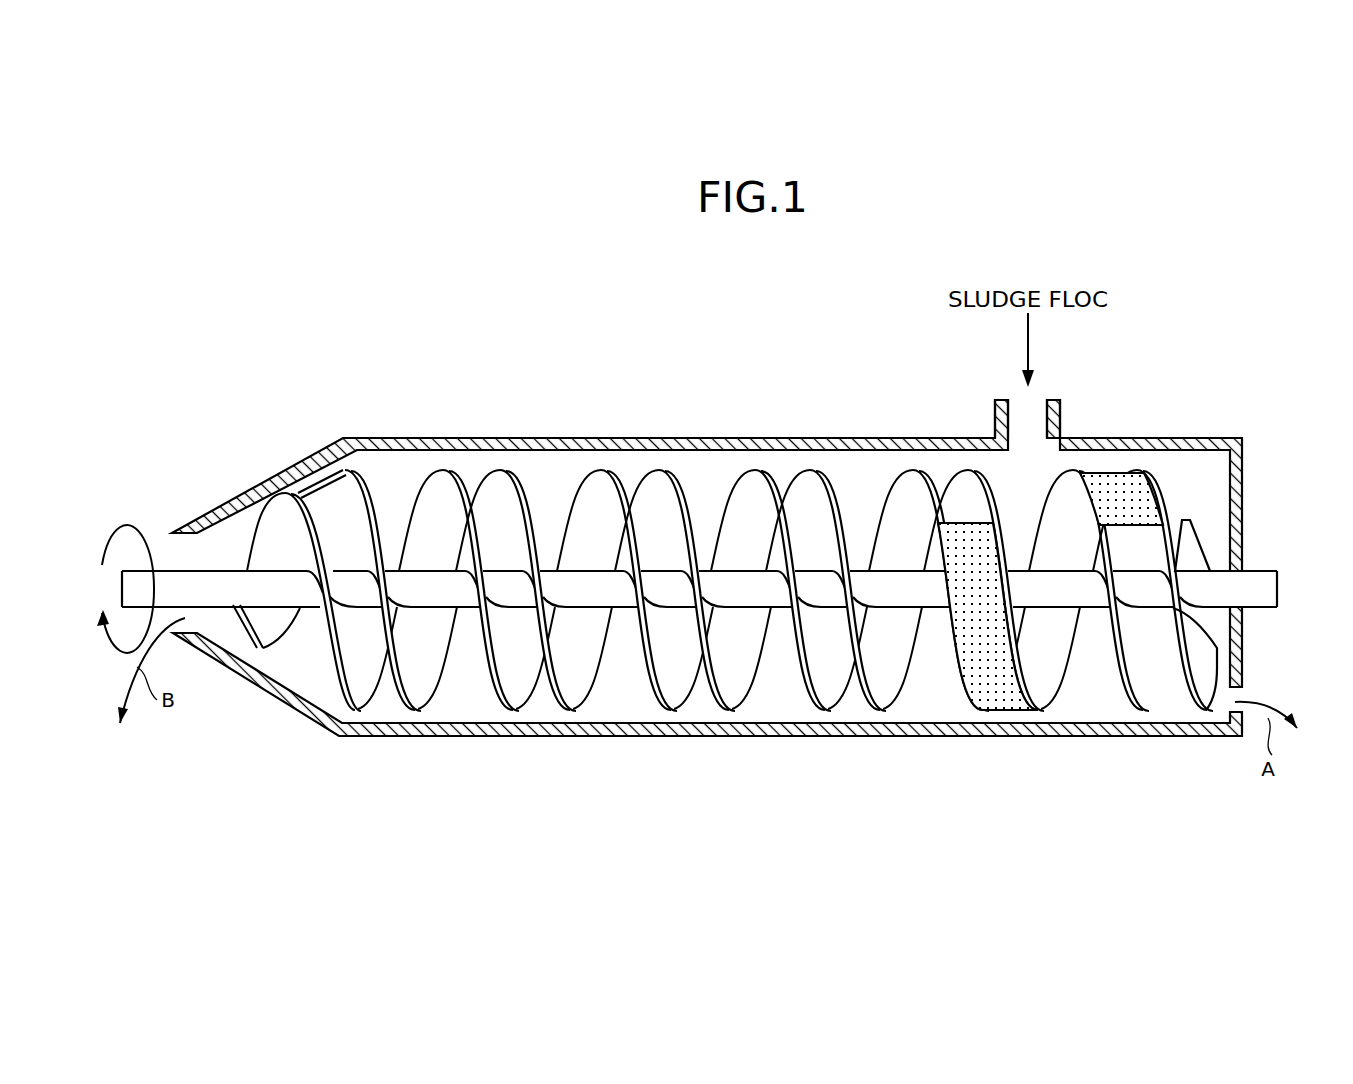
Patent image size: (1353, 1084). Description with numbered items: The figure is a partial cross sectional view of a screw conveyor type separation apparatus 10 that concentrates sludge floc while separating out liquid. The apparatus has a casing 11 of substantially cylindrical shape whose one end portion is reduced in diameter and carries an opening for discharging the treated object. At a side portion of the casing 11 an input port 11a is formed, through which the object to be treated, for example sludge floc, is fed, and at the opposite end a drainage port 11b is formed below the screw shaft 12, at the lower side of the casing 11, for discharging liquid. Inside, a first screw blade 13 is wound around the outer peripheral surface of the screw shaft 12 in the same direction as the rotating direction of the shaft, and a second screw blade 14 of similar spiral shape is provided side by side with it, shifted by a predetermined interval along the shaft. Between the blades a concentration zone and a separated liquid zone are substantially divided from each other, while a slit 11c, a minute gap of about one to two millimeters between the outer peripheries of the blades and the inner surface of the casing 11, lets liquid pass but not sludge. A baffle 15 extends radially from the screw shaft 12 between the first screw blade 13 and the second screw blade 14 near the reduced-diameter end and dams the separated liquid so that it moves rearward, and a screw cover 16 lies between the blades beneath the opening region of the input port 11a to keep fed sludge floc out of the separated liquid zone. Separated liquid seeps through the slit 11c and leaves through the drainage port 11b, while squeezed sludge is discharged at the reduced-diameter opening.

The screw conveyor type separation apparatus 10 is at (792, 400).
The casing 11 is at (440, 440).
The input port 11a is at (1010, 413).
The drainage port 11b is at (1243, 692).
The slit 11c is at (577, 712).
The screw shaft 12 is at (130, 588).
The first screw blade 13 is at (282, 521).
The second screw blade 14 is at (370, 500).
The baffle 15 is at (330, 503).
The screw cover 16 is at (1010, 706).